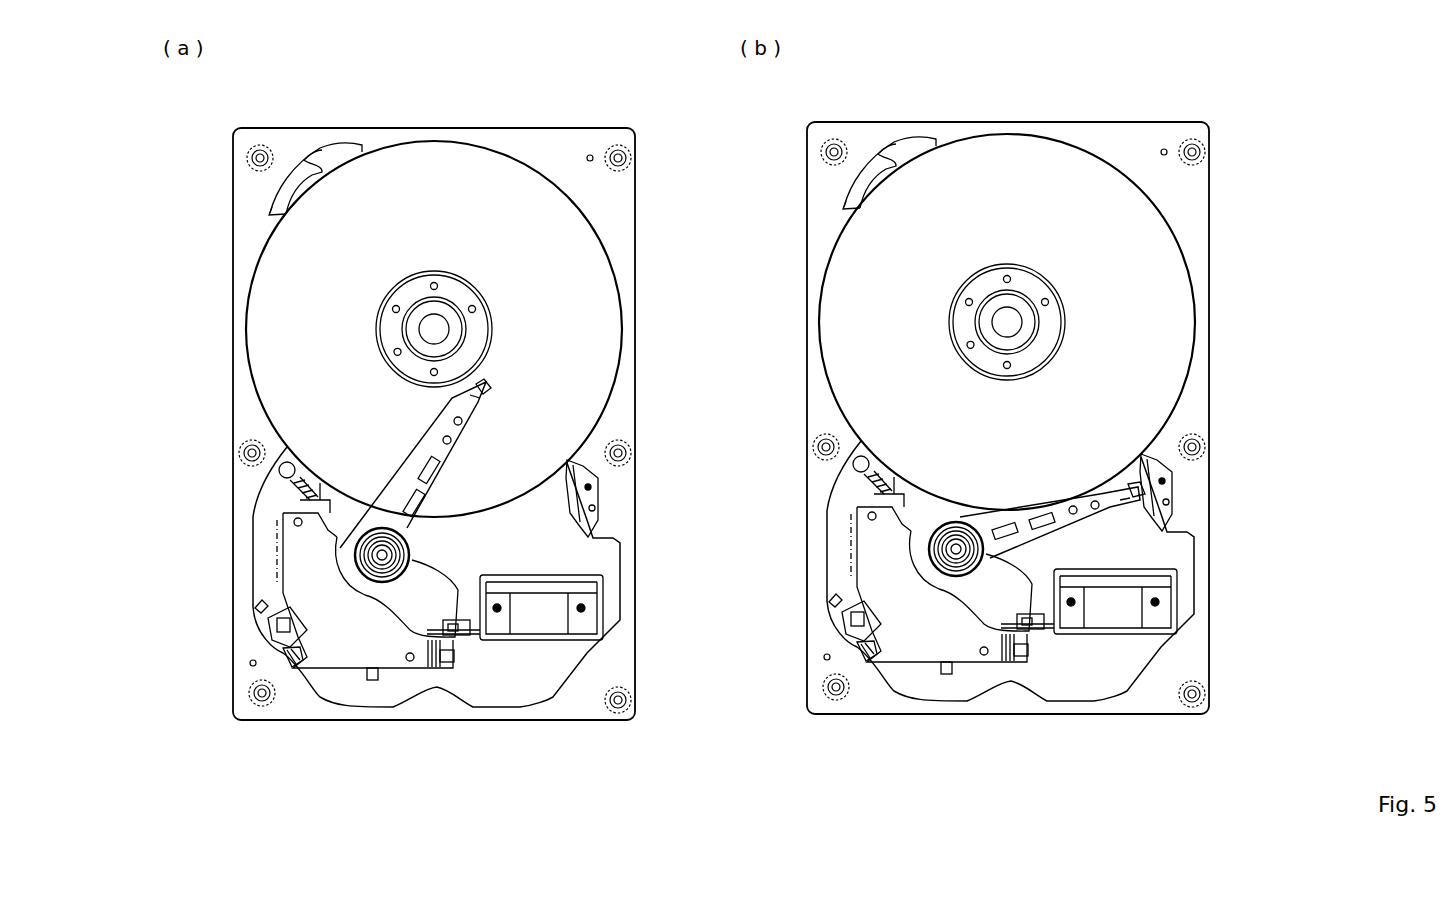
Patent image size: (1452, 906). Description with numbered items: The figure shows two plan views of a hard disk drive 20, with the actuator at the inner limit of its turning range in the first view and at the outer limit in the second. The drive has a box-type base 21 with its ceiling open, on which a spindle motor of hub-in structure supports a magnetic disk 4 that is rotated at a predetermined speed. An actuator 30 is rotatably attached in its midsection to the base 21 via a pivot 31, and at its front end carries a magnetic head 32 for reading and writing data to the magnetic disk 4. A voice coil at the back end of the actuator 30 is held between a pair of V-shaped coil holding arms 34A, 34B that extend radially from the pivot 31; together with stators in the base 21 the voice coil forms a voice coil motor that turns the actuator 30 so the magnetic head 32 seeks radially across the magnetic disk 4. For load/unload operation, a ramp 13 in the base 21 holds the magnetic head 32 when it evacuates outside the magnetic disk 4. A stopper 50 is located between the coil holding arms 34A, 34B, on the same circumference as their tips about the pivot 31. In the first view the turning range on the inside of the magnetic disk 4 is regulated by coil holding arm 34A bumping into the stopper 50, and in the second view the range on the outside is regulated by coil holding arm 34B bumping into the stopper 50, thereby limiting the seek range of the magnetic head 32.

The hard disk drive 20 is at (481, 106).
The base 21 is at (622, 207).
The magnetic disk 4 is at (597, 335).
The actuator 30 is at (453, 472).
The pivot 31 is at (384, 555).
The magnetic head 32 is at (481, 383).
The ramp 13 is at (566, 468).
The coil holding arm 34A is at (277, 607).
The coil holding arm 34B is at (373, 680).
The stopper 50 is at (272, 620).